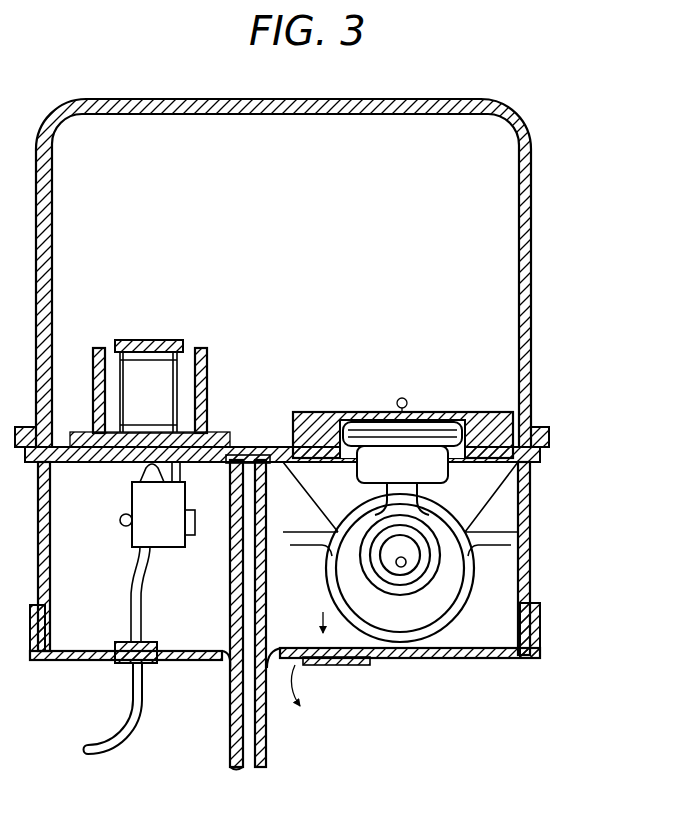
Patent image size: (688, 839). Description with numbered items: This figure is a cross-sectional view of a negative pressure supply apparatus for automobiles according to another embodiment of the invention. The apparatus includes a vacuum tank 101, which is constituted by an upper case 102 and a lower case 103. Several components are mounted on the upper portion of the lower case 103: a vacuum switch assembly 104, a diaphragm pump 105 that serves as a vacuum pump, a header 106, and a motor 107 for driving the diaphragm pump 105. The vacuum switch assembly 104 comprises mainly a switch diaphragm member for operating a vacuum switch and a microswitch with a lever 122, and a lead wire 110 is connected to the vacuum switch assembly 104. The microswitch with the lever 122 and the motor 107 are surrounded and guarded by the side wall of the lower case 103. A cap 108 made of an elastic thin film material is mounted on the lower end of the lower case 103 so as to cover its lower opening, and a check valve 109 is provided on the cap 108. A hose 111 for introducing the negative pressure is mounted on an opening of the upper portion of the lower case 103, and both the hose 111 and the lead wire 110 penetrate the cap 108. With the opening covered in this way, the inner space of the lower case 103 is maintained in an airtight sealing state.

The vacuum tank 101 is at (536, 320).
The upper case 102 is at (533, 210).
The lower case 103 is at (531, 541).
The vacuum switch assembly 104 is at (173, 338).
The diaphragm pump 105 is at (420, 440).
The header 106 is at (296, 411).
The motor 107 is at (415, 618).
The cap 108 is at (60, 662).
The check valve 109 is at (330, 665).
The lead wire 110 is at (128, 740).
The hose 111 is at (268, 740).
The microswitch with a lever 122 is at (132, 504).